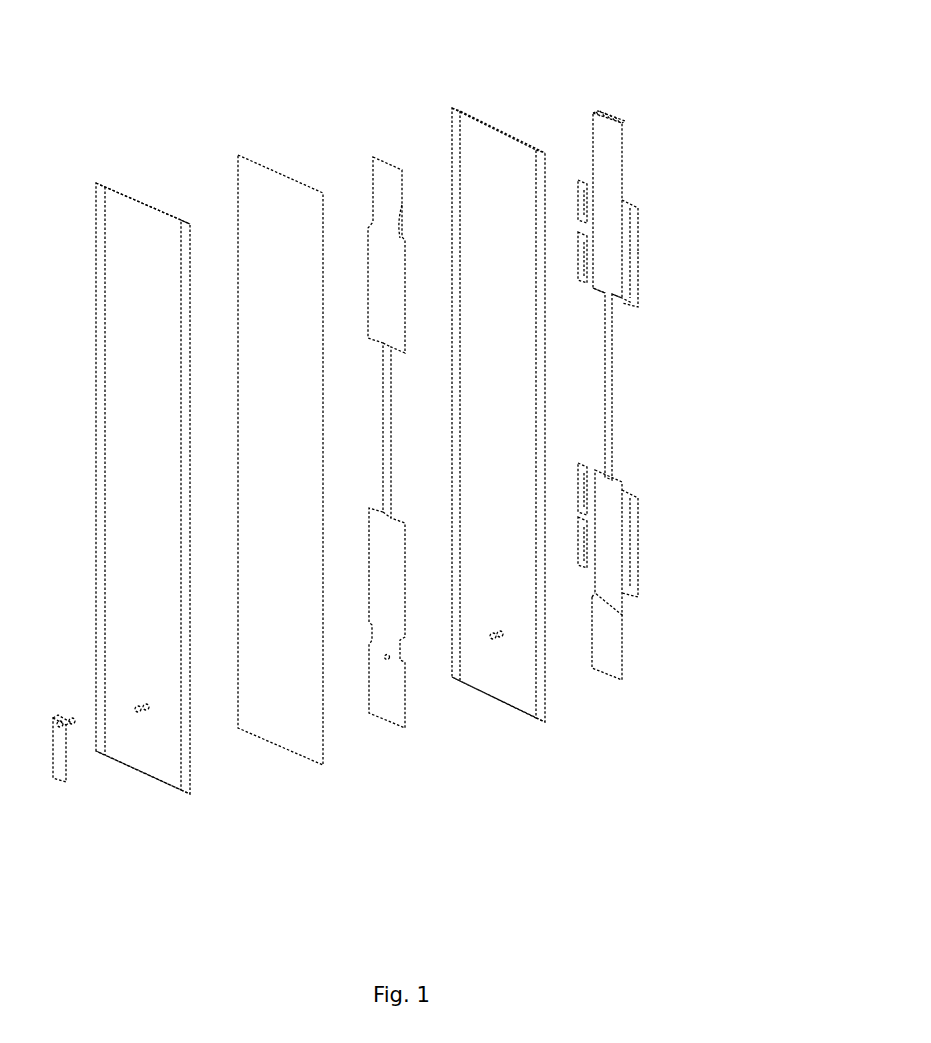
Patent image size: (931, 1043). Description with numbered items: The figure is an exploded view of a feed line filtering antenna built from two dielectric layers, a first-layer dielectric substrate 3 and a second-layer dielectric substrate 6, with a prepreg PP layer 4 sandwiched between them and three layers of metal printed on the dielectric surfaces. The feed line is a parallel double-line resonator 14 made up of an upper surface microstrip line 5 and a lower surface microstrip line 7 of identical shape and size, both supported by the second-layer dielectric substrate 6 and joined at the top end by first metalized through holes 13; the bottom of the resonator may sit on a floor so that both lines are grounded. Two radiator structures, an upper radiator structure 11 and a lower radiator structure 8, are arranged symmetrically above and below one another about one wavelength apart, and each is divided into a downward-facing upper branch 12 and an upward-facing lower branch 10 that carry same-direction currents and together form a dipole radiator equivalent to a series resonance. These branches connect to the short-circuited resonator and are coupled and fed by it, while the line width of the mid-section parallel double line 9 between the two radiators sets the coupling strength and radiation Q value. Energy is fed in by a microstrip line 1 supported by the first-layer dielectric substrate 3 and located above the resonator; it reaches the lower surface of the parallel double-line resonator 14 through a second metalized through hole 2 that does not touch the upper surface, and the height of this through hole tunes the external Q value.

The microstrip line 1 is at (56, 743).
The second metalized through hole 2 is at (75, 723).
The first-layer dielectric substrate 3 is at (172, 723).
The prepreg PP layer 4 is at (293, 720).
The upper surface microstrip line 5 is at (398, 703).
The second-layer dielectric substrate 6 is at (529, 686).
The lower surface microstrip line 7 is at (608, 632).
The lower radiator structure 8 is at (628, 538).
The mid-section parallel double line 9 is at (613, 390).
The lower branch 10 is at (628, 302).
The upper radiator structure 11 is at (628, 250).
The upper branch 12 is at (628, 210).
The first metalized through hole 13 is at (598, 125).
The parallel double-line resonator 14 is at (388, 288).